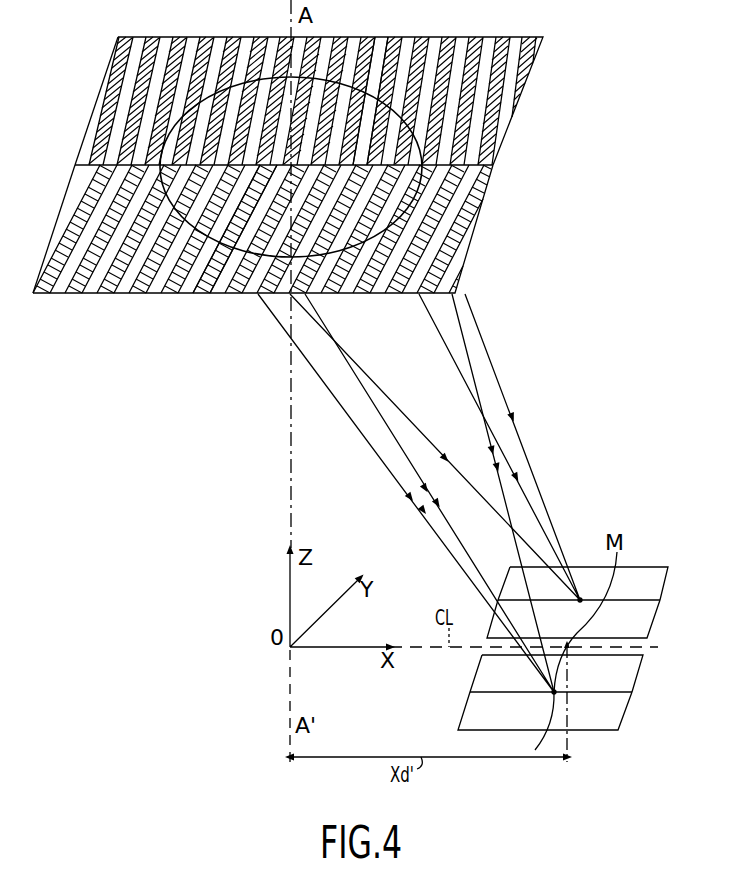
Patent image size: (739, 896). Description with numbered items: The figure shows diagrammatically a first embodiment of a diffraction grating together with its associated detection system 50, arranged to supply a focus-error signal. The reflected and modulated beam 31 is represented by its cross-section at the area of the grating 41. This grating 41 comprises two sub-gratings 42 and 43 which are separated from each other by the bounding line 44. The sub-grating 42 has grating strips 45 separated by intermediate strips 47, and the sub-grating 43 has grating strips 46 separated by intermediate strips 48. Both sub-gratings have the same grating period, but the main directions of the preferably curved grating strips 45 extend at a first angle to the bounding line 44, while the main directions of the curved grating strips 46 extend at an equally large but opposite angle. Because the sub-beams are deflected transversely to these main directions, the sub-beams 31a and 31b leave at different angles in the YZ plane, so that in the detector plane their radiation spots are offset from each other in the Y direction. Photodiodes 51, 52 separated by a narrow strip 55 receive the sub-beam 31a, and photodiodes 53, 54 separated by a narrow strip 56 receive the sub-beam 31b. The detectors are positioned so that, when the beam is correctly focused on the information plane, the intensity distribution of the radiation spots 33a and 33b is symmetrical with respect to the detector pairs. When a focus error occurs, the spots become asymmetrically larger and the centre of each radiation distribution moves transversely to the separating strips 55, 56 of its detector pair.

The reflected and modulated beam 31 is at (240, 80).
The first sub-beam 31a is at (476, 313).
The second sub-beam 31b is at (487, 425).
The first radiation spot 33a is at (581, 599).
The second radiation spot 33b is at (535, 750).
The grating 41 is at (471, 17).
The first sub-grating 42 is at (103, 82).
The second sub-grating 43 is at (43, 263).
The bounding line 44 is at (80, 165).
The grating strips of first sub-grating 45 is at (342, 40).
The grating strips of second sub-grating 46 is at (153, 296).
The intermediate strips of first sub-grating 47 is at (380, 55).
The intermediate strips of second sub-grating 48 is at (199, 296).
The detection system 50 is at (581, 634).
The photodiode 51 is at (653, 580).
The photodiode 52 is at (637, 626).
The photodiode 53 is at (625, 667).
The photodiode 54 is at (607, 717).
The separating strip 55 is at (644, 599).
The separating strip 56 is at (617, 692).